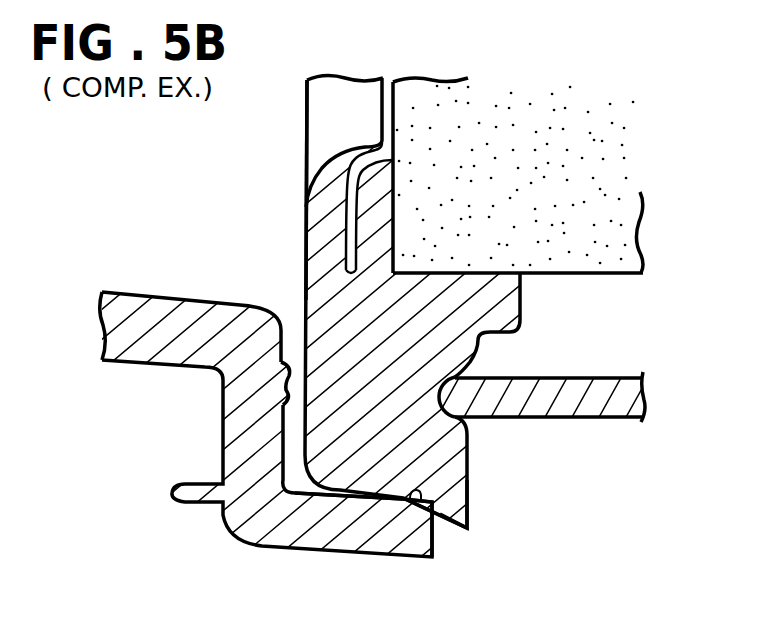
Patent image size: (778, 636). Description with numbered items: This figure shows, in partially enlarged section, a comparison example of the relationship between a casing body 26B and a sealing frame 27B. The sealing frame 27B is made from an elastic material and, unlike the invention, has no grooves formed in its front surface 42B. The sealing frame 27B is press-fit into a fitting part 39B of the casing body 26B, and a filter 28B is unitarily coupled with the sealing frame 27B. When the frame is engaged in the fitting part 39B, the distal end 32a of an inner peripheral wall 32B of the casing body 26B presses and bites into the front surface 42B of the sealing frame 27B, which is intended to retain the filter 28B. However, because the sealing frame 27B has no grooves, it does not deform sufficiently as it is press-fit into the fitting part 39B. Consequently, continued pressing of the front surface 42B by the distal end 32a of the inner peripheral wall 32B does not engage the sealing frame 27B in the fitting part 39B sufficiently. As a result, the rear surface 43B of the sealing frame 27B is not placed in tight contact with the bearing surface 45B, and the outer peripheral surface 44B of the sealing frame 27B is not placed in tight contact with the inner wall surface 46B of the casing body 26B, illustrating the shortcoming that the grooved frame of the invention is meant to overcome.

The casing body 26B is at (172, 317).
The filter 28B is at (597, 175).
The rear surface of the sealing frame 43B is at (305, 287).
The bearing surface 45B is at (285, 381).
The front surface of the sealing frame 42B is at (470, 457).
The inner peripheral wall 32B is at (610, 380).
The distal end of the inner peripheral wall 32a is at (445, 376).
The sealing frame 27B is at (490, 516).
The fitting part 39B is at (510, 548).
The outer peripheral surface of the sealing frame 44B is at (397, 503).
The inner wall surface of the casing body 46B is at (415, 503).